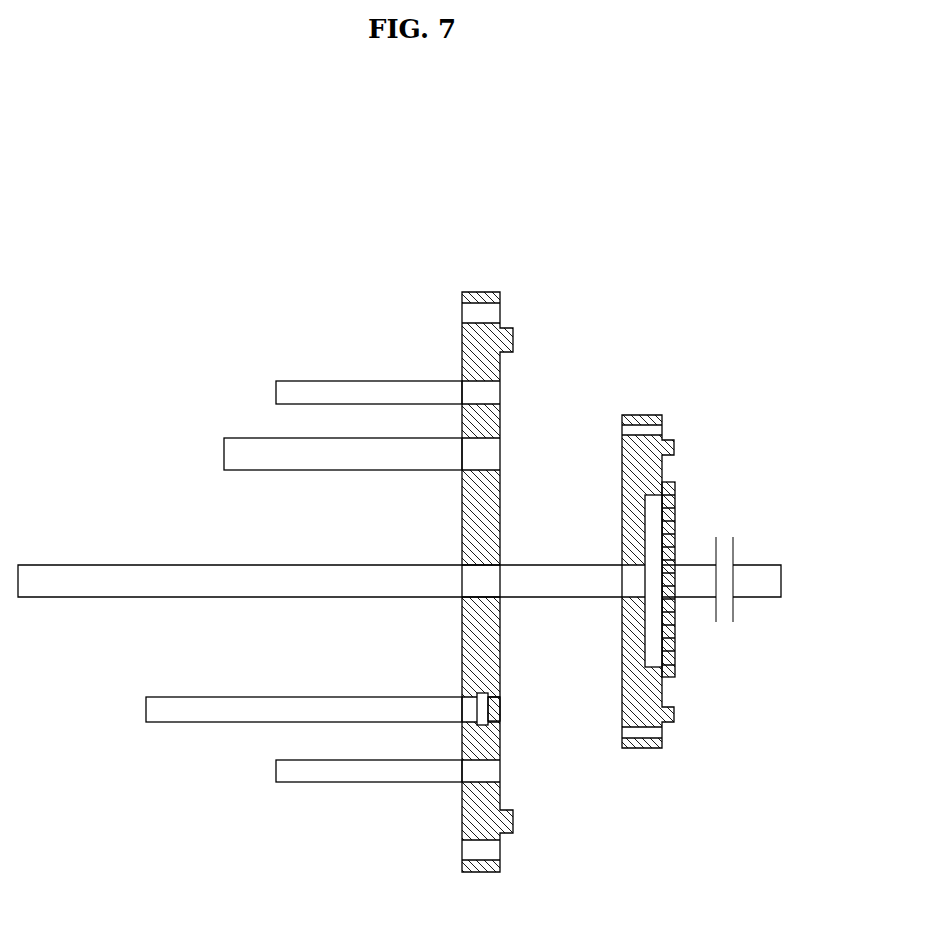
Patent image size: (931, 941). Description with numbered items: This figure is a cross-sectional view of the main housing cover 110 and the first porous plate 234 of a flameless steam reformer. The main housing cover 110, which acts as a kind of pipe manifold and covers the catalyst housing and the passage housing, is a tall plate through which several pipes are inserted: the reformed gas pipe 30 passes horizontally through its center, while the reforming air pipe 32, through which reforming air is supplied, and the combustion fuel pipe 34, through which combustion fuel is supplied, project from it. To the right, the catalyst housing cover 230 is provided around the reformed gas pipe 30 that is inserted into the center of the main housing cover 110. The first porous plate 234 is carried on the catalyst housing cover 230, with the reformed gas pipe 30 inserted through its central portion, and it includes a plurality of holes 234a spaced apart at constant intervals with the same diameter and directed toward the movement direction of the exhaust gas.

The reformed gas pipe 30 is at (92, 563).
The reforming air pipe 32 is at (257, 438).
The combustion fuel pipe 34 is at (347, 380).
The main housing cover 110 is at (452, 280).
The catalyst housing cover 230 is at (712, 531).
The first porous plate 234 is at (723, 535).
The holes 234a is at (680, 517).